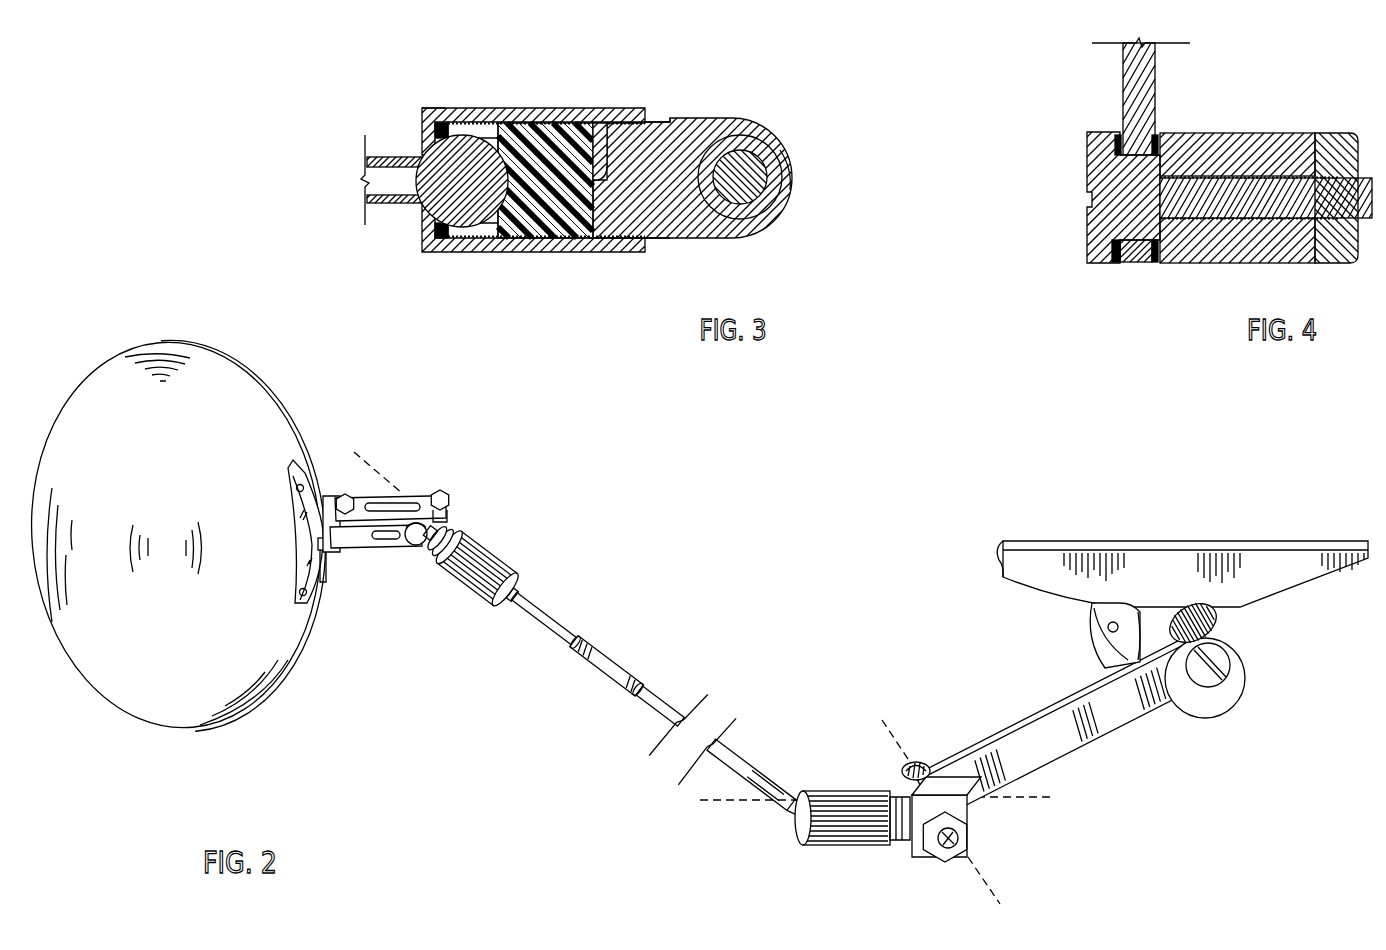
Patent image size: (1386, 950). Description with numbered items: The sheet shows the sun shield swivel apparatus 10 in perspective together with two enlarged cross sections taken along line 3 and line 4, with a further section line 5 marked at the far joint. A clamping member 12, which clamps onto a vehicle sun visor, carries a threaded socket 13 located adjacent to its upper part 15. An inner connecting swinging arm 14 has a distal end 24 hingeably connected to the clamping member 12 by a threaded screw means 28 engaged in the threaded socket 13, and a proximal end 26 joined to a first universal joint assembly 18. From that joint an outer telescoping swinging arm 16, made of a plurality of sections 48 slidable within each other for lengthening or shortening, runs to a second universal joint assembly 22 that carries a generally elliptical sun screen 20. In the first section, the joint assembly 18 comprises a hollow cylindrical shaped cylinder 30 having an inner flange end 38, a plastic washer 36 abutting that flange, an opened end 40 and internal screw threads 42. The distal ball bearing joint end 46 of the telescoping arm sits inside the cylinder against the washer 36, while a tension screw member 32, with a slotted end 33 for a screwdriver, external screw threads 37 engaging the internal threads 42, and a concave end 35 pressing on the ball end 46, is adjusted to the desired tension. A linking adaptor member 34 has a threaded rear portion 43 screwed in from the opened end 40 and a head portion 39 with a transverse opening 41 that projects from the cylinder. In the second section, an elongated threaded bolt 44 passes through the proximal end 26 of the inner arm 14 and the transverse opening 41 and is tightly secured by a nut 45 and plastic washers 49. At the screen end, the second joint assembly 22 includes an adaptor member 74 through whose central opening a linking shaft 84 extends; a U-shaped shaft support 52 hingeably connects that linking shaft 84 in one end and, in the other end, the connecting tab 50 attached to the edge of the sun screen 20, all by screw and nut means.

In FIG. 2, the sun shield swivel apparatus 10 is at (1120, 810).
In FIG. 2, the clamping member 12 is at (1287, 600).
In FIG. 2, the threaded socket 13 is at (1174, 603).
In FIG. 4, the inner connecting swinging rod or arm 14 is at (1122, 100).
In FIG. 2, the inner connecting swinging rod or arm 14 is at (1000, 726).
In FIG. 2, the upper part of the clamping member 15 is at (1230, 637).
In FIG. 2, the outer telescoping connecting swinging rod or arm 16 is at (658, 684).
In FIG. 3, the first universal joint assembly 18 is at (694, 70).
In FIG. 2, the first universal joint assembly 18 is at (836, 850).
In FIG. 2, the sun screen 20 is at (220, 730).
In FIG. 2, the second universal joint assembly 22 is at (501, 552).
In FIG. 2, the distal end of the inner connecting arm 24 is at (1186, 682).
In FIG. 4, the proximal end of the inner connecting arm 26 is at (1134, 259).
In FIG. 2, the proximal end of the inner connecting arm 26 is at (960, 804).
In FIG. 2, the threaded screw means 28 is at (1228, 664).
In FIG. 3, the hollow cylindrical shaped cylinder 30 is at (558, 256).
In FIG. 3, the tension screw member 32 is at (552, 126).
In FIG. 3, the slotted end 33 is at (600, 176).
In FIG. 3, the linking adaptor member 34 is at (792, 134).
In FIG. 3, the concave end 35 is at (483, 130).
In FIG. 3, the plastic washer 36 is at (440, 120).
In FIG. 3, the external screw threads 37 is at (478, 240).
In FIG. 3, the inner flange end 38 is at (436, 220).
In FIG. 3, the head portion 39 is at (745, 118).
In FIG. 4, the head portion 39 is at (1237, 133).
In FIG. 3, the opened end 40 is at (647, 241).
In FIG. 3, the transverse opening 41 is at (757, 212).
In FIG. 3, the internal screw threads 42 is at (462, 126).
In FIG. 3, the rear portion 43 is at (630, 222).
In FIG. 3, the elongated threaded bolt 44 is at (756, 175).
In FIG. 4, the elongated threaded bolt 44 is at (1082, 266).
In FIG. 4, the nut 45 is at (1335, 140).
In FIG. 2, the nut 45 is at (970, 840).
In FIG. 3, the distal ball bearing joint end 46 is at (448, 195).
In FIG. 2, the sections 48 is at (647, 705).
In FIG. 4, the plastic washers 49 is at (1117, 263).
In FIG. 2, the connecting tab 50 is at (330, 556).
In FIG. 2, the shaft support 52 is at (392, 558).
In FIG. 2, the adaptor member 74 is at (436, 538).
In FIG. 2, the linking shaft 84 is at (445, 510).
In FIG. 2, the section line 3— 3 is at (708, 803).
In FIG. 2, the section line 4— 4 is at (879, 716).
In FIG. 2, the section line 5— 5 is at (351, 449).